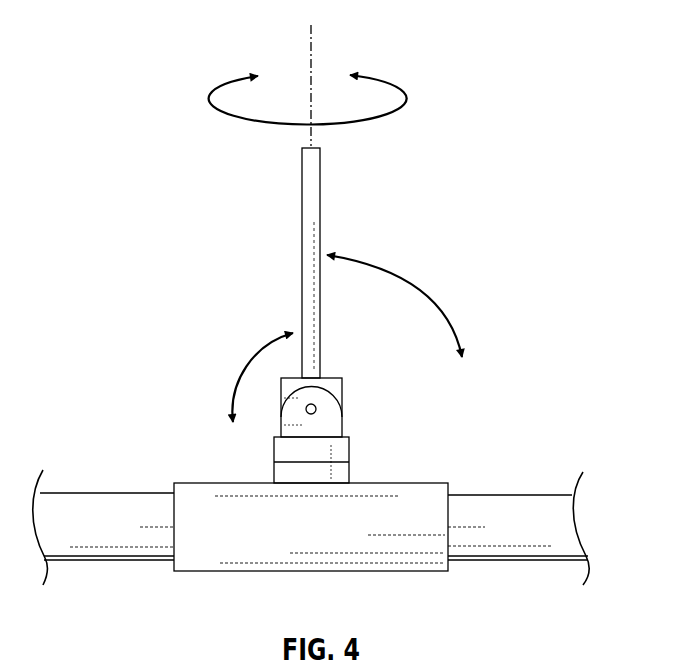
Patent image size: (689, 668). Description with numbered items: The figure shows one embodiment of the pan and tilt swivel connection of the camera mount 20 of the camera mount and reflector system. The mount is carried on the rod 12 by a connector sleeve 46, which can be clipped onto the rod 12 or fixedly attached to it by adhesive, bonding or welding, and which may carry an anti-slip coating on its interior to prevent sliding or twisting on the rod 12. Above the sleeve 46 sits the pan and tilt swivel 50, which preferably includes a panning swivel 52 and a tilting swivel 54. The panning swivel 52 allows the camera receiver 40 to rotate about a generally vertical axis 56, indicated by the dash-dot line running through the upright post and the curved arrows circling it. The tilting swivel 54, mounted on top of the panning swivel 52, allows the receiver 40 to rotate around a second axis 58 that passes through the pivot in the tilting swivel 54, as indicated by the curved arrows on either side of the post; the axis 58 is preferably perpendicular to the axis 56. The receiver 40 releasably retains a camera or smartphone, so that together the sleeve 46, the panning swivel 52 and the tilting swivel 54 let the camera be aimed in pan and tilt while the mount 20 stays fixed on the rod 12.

The rod 12 is at (85, 560).
The camera mount 20 is at (372, 164).
The camera receiver 40 is at (302, 202).
The connector sleeve 46 is at (433, 484).
The pan and tilt swivel 50 is at (275, 437).
The panning swivel 52 is at (349, 461).
The tilting swivel 54 is at (342, 385).
The axis 56 is at (311, 43).
The axis 58 is at (315, 405).